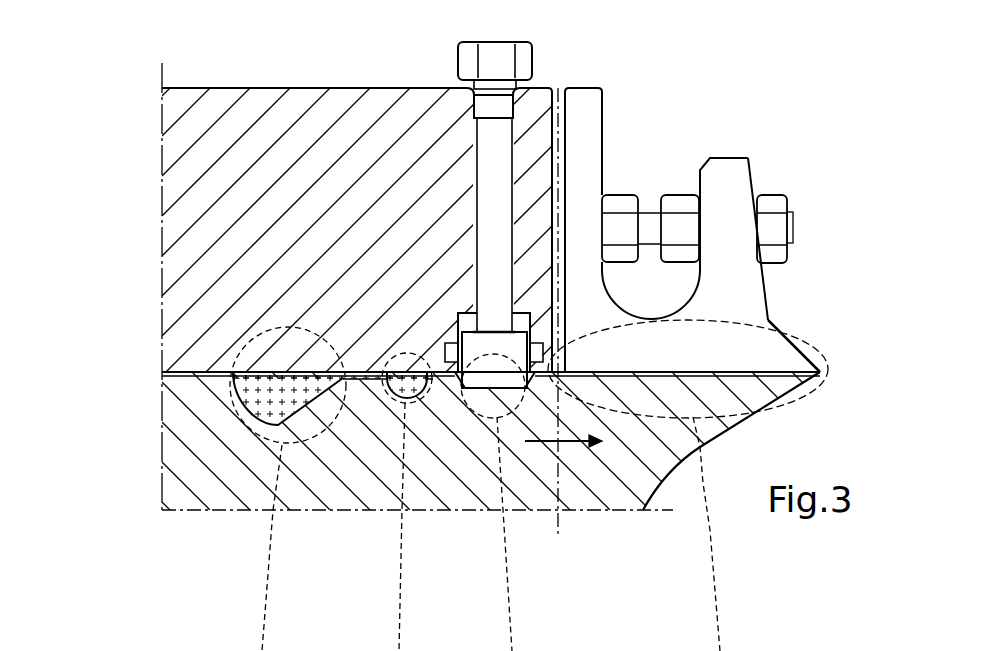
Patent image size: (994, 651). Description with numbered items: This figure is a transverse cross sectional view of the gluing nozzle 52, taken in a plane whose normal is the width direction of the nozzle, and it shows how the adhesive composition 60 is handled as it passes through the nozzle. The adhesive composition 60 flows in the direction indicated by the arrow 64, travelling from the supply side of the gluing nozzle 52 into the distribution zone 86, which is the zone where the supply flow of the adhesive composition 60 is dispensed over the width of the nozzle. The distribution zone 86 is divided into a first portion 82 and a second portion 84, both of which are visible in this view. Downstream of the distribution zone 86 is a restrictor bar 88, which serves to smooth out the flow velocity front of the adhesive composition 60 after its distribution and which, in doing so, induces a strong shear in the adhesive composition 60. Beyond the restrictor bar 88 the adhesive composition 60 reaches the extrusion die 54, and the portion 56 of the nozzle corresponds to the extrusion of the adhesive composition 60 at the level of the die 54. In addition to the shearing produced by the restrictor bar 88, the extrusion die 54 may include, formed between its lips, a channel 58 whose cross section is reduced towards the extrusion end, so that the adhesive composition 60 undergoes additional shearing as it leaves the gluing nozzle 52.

The gluing nozzle 52 is at (122, 184).
The extrusion die 54 is at (817, 82).
The portion corresponding to extrusion at the die 56 is at (830, 356).
The channel 58 is at (757, 367).
The adhesive composition 60 is at (740, 412).
The arrow 64 is at (570, 443).
The first portion 82 is at (278, 325).
The second portion 84 is at (407, 353).
The distribution zone 86 is at (408, 216).
The restrictor bar 88 is at (468, 410).